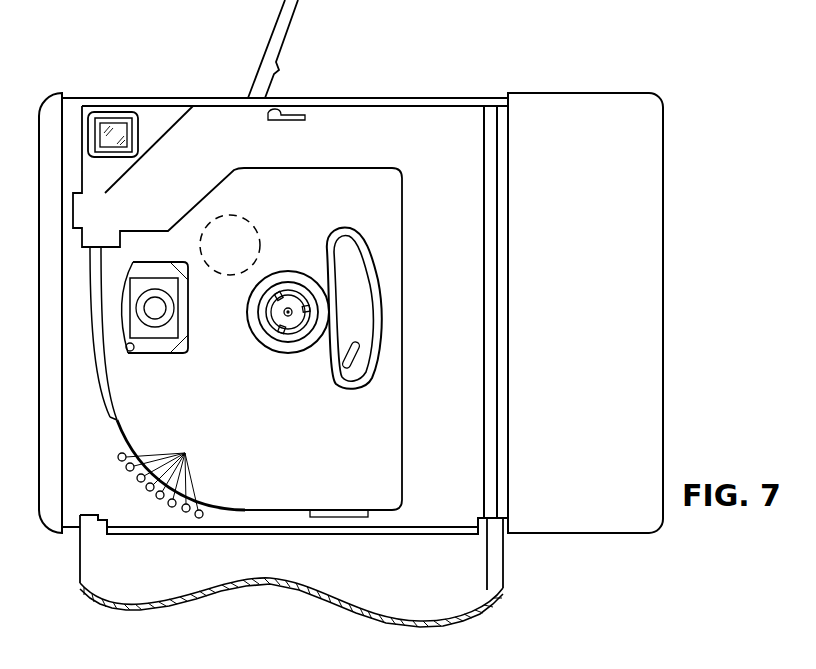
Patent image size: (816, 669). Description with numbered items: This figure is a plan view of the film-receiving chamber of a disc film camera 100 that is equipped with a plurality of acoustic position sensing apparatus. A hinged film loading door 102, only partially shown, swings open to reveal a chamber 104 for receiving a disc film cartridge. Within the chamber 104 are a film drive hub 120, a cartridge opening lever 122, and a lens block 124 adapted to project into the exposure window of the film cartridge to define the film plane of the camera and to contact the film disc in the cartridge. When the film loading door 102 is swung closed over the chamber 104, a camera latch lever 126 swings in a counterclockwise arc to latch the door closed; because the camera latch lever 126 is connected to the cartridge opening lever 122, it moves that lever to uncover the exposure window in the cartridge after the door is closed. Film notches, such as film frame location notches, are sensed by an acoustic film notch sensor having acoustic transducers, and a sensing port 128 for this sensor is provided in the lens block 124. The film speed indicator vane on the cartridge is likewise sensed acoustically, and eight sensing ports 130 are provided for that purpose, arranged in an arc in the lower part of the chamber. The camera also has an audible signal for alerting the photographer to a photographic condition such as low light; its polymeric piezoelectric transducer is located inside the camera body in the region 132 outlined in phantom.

The camera 100 is at (400, 78).
The film loading door 102 is at (503, 603).
The chamber 104 is at (259, 452).
The film drive hub 120 is at (288, 300).
The cartridge opening lever 122 is at (345, 373).
The lens block 124 is at (190, 275).
The camera latch lever 126 is at (274, 37).
The sensing port 128 is at (134, 351).
The sensing ports 130 is at (160, 474).
The region 132 is at (207, 213).